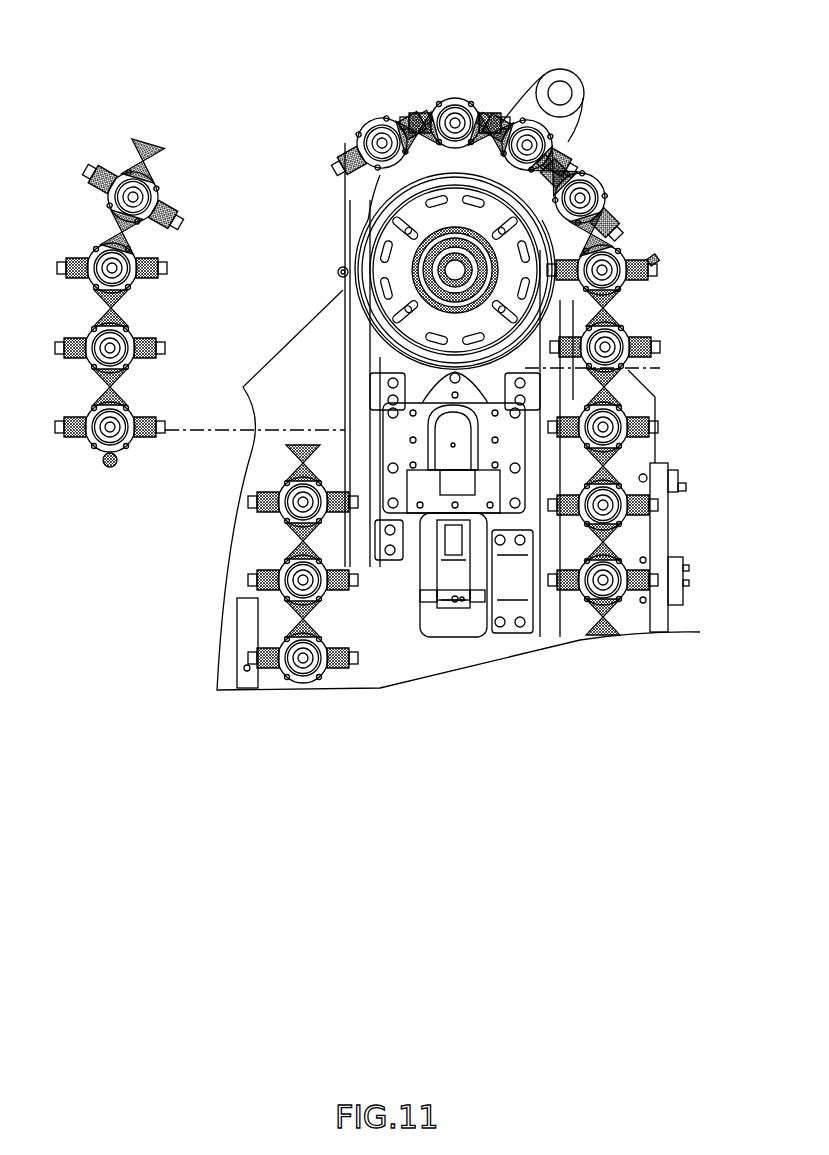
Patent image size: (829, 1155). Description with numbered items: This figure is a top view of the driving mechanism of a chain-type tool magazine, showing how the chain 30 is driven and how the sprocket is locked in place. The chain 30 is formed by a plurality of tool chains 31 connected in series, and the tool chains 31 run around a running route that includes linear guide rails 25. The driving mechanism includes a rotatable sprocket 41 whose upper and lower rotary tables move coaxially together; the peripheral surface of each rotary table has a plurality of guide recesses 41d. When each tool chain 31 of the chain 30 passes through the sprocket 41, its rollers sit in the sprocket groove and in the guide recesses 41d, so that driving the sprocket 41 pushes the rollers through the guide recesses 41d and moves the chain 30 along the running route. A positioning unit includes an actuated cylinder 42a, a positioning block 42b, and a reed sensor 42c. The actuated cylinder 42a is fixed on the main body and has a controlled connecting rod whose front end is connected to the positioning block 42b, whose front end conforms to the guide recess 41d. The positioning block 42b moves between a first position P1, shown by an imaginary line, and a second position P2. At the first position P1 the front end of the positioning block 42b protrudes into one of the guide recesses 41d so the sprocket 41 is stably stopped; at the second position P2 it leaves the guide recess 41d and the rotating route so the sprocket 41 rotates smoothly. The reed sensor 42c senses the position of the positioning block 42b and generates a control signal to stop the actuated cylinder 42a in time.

The tool chain 31 is at (128, 168).
The rotatable sprocket 41 is at (437, 213).
The guide recess 41d is at (380, 308).
The second position P2 is at (450, 440).
The positioning block 42b is at (455, 445).
The chain 30 is at (655, 262).
The first position P1 is at (650, 367).
The reed sensor 42c is at (600, 500).
The actuated cylinder 42a is at (457, 603).
The linear guide rail 25 is at (603, 633).